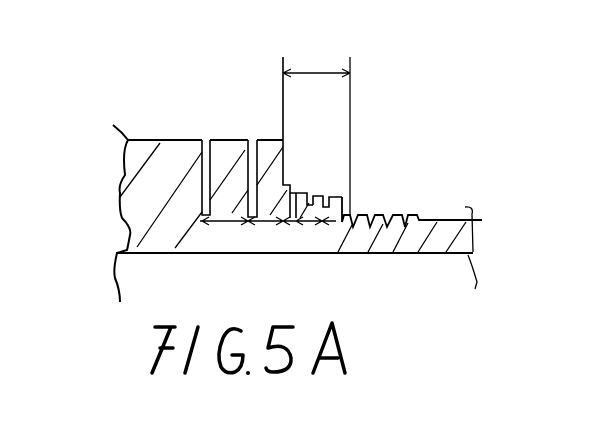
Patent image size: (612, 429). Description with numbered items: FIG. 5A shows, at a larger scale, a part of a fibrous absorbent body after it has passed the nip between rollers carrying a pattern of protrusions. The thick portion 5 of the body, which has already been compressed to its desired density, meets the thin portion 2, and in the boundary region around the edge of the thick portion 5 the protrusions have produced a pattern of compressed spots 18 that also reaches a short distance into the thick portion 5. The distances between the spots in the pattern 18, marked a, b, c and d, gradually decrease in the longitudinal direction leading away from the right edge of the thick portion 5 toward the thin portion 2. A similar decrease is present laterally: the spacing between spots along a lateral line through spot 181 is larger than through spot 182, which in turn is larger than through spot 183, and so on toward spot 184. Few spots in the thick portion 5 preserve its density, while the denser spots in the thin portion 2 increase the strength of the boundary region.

The thick portion 5 is at (160, 175).
The thin portion 2 is at (382, 238).
The pattern of compressed spots 18 is at (336, 133).
The compressed spot 181 is at (205, 130).
The compressed spot 182 is at (253, 131).
The compressed spot 183 is at (298, 184).
The compressed spot 184 is at (318, 196).